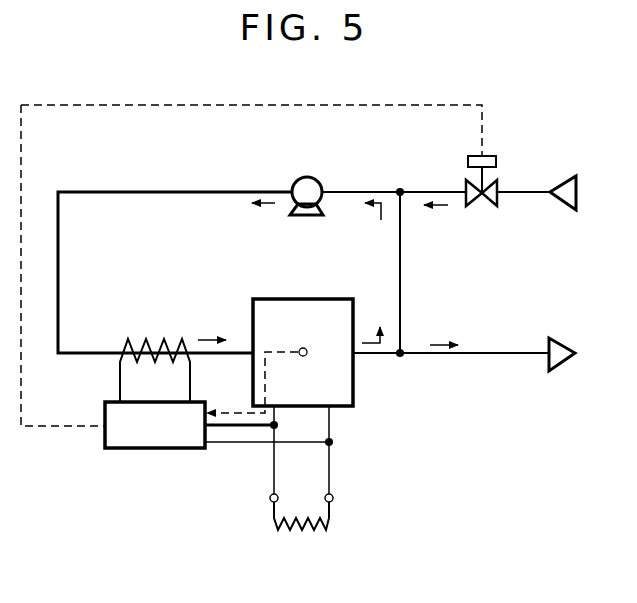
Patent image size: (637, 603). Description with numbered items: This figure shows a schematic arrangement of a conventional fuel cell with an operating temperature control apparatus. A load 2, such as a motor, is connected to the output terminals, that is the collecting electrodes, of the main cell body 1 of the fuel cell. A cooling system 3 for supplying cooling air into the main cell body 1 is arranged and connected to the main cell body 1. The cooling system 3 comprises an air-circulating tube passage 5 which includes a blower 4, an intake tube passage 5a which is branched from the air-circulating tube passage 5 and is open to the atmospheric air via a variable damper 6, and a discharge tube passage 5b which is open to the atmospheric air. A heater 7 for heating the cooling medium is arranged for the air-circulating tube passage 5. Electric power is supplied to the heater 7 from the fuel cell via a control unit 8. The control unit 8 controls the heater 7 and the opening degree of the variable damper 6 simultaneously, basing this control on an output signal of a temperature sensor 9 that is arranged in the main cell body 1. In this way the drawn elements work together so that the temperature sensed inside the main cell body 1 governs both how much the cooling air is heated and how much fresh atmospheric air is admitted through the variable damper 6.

The main cell body 1 is at (303, 296).
The load 2 is at (300, 531).
The cooling system 3 is at (60, 264).
The blower 4 is at (306, 177).
The air-circulating tube passage 5 is at (118, 190).
The intake tube passage 5a is at (525, 191).
The discharge tube passage 5b is at (489, 351).
The variable damper 6 is at (484, 208).
The heater 7 is at (128, 341).
The control unit 8 is at (128, 449).
The temperature sensor 9 is at (304, 350).